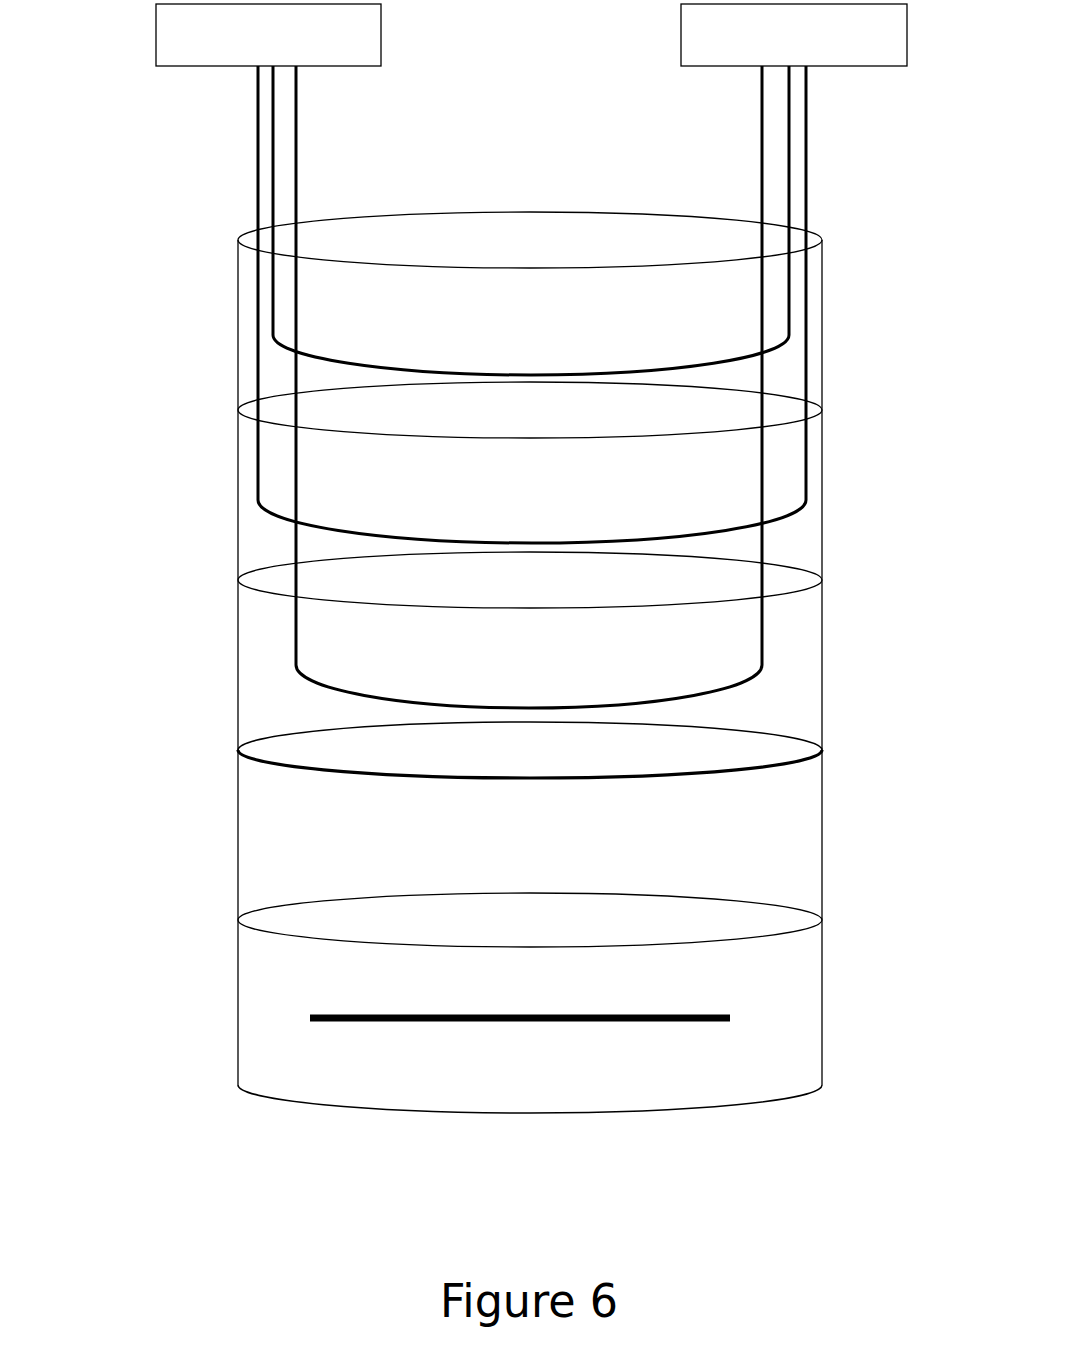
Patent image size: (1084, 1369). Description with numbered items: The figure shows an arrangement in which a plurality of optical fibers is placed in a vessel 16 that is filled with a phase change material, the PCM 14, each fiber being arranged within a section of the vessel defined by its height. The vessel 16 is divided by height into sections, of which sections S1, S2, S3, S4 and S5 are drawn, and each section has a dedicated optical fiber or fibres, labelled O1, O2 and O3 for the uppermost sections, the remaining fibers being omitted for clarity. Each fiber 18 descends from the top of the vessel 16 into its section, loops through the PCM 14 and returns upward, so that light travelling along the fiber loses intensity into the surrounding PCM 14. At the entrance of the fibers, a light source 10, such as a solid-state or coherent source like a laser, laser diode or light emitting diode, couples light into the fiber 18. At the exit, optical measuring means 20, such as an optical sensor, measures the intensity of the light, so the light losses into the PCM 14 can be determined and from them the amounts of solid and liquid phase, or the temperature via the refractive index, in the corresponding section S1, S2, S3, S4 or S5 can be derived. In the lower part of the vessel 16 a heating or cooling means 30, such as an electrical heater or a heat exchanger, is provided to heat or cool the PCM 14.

The light source 10 is at (268, 35).
The optical measuring means 20 is at (794, 35).
The PCM filling 14 is at (270, 545).
The vessel 16 is at (223, 250).
The optical fiber 18 is at (270, 188).
The heating or cooling means 30 is at (288, 1020).
The optical fiber O1 is at (788, 113).
The optical fiber O2 is at (861, 114).
The optical fiber O3 is at (762, 155).
The section S1 is at (881, 332).
The section S2 is at (881, 491).
The section S3 is at (881, 657).
The section S4 is at (885, 851).
The section S5 is at (883, 1009).